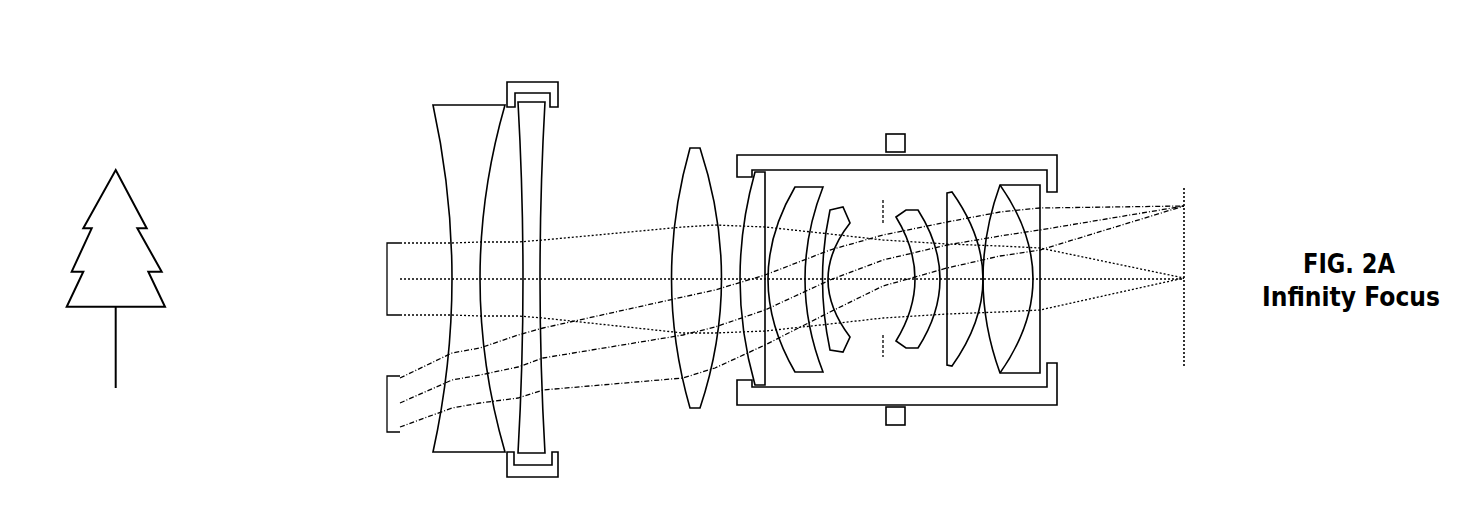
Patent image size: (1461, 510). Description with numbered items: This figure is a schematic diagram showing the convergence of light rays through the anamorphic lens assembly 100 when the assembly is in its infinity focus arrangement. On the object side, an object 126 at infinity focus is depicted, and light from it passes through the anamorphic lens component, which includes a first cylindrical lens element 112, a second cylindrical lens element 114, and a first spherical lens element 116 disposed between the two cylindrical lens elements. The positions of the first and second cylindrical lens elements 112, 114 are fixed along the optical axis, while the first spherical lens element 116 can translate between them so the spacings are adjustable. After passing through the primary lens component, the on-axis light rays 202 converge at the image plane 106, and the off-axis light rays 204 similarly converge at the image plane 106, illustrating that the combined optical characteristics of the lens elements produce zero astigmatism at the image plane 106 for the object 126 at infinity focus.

The anamorphic lens assembly 100 is at (1142, 136).
The image plane 106 is at (1183, 327).
The first cylindrical lens element 112 is at (433, 128).
The second cylindrical lens element 114 is at (688, 163).
The first spherical lens element 116 is at (545, 405).
The object 126 is at (116, 170).
The on-axis light rays 202 is at (387, 283).
The off-axis light rays 204 is at (387, 395).